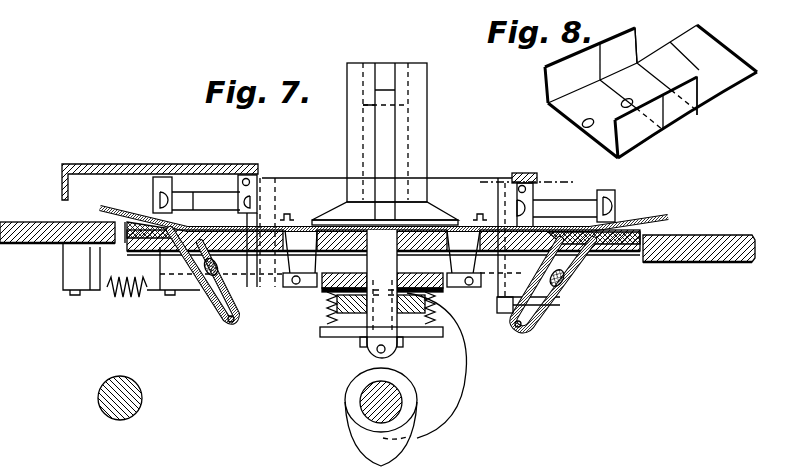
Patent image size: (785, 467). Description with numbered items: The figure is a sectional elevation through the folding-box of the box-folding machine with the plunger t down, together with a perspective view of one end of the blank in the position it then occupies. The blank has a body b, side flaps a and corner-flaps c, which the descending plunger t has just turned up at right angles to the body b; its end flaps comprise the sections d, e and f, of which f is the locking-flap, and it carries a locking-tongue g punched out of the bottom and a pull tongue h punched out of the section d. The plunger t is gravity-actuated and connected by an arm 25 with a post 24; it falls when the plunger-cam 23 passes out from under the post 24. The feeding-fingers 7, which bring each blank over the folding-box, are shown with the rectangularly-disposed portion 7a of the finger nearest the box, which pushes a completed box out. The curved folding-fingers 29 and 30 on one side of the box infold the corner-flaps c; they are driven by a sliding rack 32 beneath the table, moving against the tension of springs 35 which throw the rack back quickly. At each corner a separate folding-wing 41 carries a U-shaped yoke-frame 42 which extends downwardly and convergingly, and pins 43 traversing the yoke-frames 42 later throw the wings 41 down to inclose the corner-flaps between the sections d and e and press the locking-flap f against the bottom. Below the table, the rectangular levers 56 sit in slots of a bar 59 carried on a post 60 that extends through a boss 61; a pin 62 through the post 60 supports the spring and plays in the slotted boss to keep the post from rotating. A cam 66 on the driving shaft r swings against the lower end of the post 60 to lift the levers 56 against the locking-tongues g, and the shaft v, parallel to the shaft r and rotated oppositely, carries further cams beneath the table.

In FIG. 7, the feeding-fingers 7 is at (250, 174).
In FIG. 7, the rectangularly-disposed portion 7a is at (88, 164).
In FIG. 7, the arm 25 is at (385, 131).
In FIG. 7, the plunger t is at (432, 207).
In FIG. 7, the folding-finger 29 is at (581, 198).
In FIG. 7, the folding-finger 30 is at (180, 186).
In FIG. 7, the folding-wing 41 is at (128, 244).
In FIG. 7, the springs 35 is at (122, 300).
In FIG. 7, the pins 43 is at (212, 298).
In FIG. 7, the yoke-frames 42 is at (219, 317).
In FIG. 7, the rack 32 is at (566, 302).
In FIG. 7, the rectangular levers 56 is at (303, 294).
In FIG. 7, the bar 59 is at (442, 303).
In FIG. 7, the post 60 is at (355, 340).
In FIG. 7, the pin 62 is at (350, 333).
In FIG. 7, the post 24 is at (365, 352).
In FIG. 7, the boss 61 is at (416, 345).
In FIG. 7, the plunger-cam 23 is at (455, 357).
In FIG. 7, the shaft r is at (367, 405).
In FIG. 7, the cam 66 is at (403, 449).
In FIG. 7, the shaft v is at (140, 395).
In FIG. 7, the end-flap section d is at (667, 220).
In FIG. 8, the end-flap section d is at (633, 79).
In FIG. 8, the body b is at (598, 138).
In FIG. 8, the corner-flaps c is at (638, 40).
In FIG. 8, the end-flap section e is at (666, 69).
In FIG. 8, the locking-flap f is at (707, 57).
In FIG. 8, the locking-tongue g is at (582, 124).
In FIG. 8, the tongue h is at (621, 104).
In FIG. 8, the side flaps a is at (632, 142).